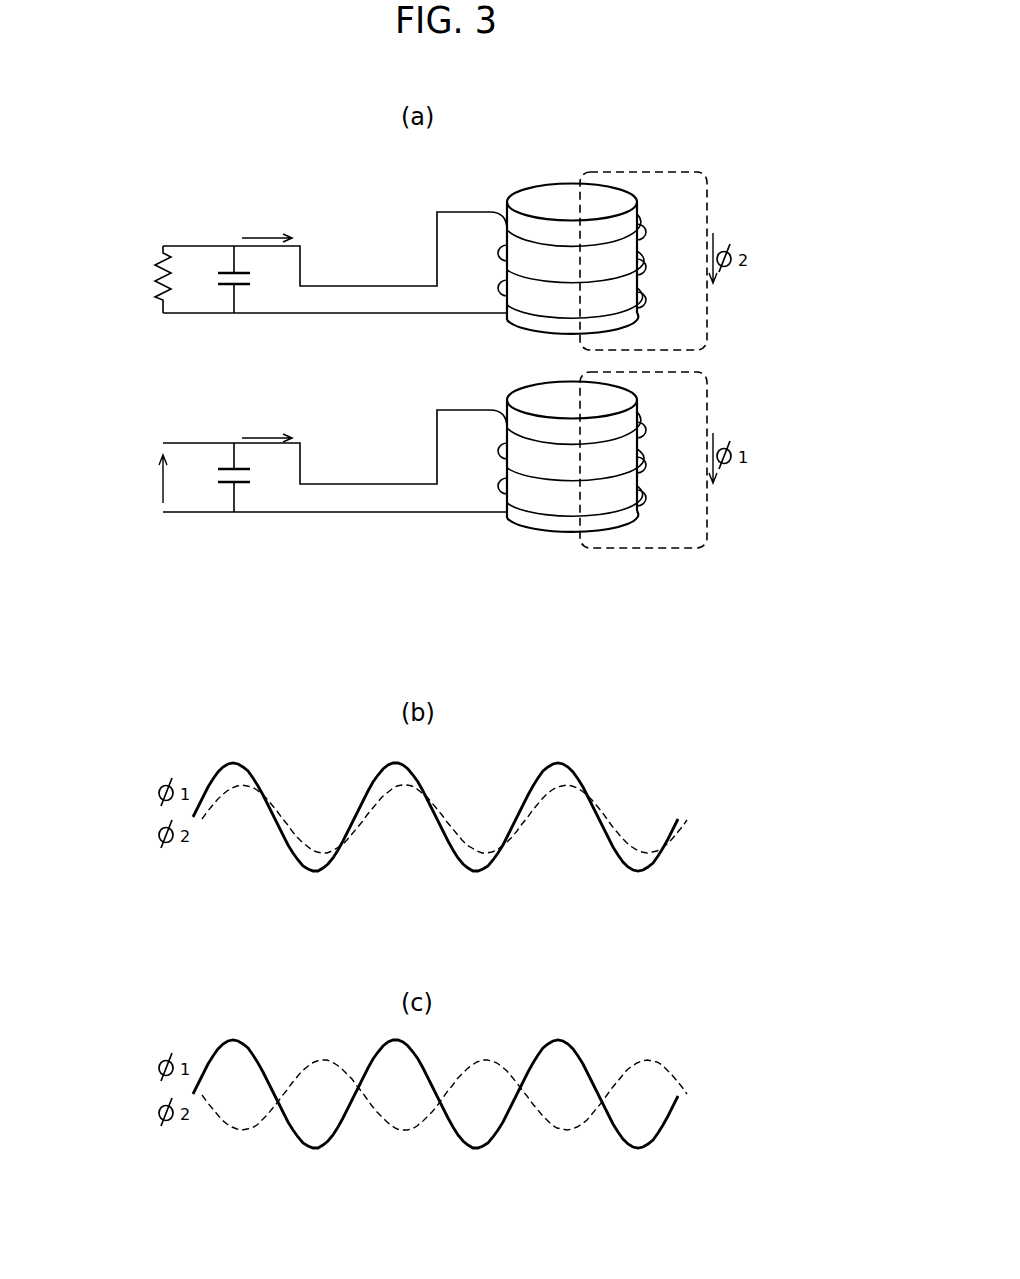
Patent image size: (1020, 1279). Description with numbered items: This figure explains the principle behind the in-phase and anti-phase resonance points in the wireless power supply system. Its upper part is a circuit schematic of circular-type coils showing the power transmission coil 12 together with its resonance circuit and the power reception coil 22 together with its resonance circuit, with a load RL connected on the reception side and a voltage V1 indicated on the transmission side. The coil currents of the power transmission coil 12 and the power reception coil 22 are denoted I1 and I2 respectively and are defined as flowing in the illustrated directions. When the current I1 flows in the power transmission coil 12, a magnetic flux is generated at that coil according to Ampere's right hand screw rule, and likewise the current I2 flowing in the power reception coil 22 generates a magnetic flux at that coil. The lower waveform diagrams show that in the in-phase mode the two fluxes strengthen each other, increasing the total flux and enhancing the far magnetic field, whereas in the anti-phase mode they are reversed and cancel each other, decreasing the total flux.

The power transmission coil 12 is at (548, 403).
The power reception coil 22 is at (548, 205).
The coil current of the power transmission coil I1 is at (267, 428).
The coil current of the power reception coil I2 is at (267, 228).
The input voltage V1 is at (149, 479).
The load RL is at (148, 279).